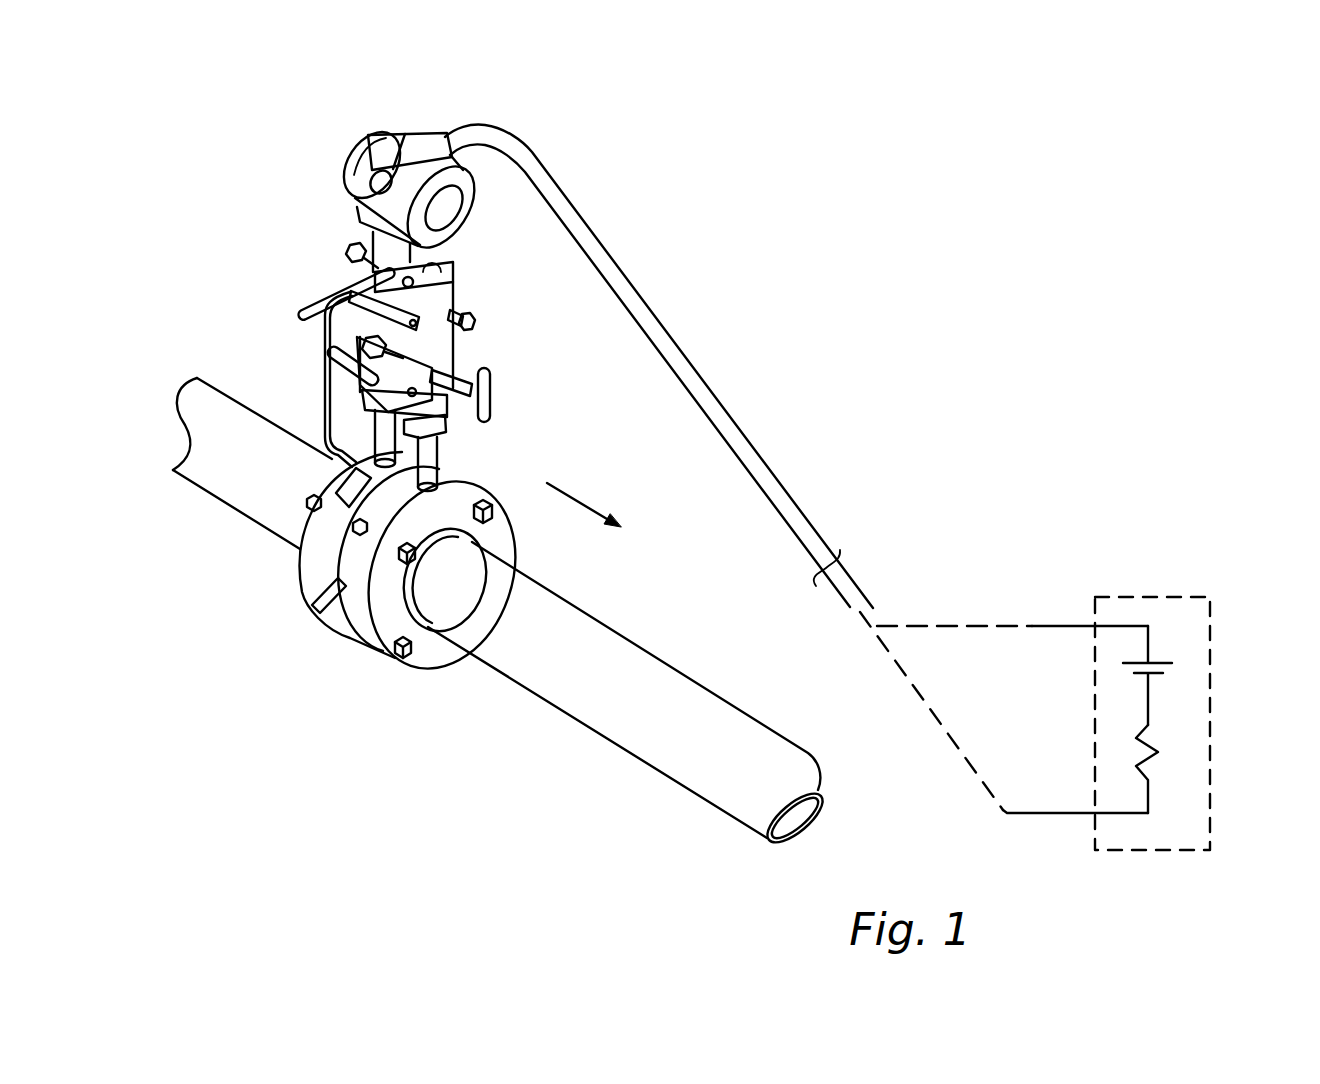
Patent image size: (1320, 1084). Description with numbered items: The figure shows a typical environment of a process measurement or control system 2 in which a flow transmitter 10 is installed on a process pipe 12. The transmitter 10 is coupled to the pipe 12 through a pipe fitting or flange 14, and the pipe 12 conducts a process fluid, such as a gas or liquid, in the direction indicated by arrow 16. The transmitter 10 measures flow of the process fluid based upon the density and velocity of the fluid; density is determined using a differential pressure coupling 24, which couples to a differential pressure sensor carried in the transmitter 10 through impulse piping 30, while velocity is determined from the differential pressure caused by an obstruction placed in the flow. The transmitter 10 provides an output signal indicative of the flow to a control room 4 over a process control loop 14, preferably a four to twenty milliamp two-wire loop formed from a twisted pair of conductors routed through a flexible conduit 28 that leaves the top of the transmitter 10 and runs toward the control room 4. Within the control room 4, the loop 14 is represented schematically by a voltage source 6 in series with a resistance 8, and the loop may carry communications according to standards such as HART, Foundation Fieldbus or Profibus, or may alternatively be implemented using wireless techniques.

The process measurement or control system 2 is at (778, 222).
The control room 4 is at (1130, 597).
The voltage source 6 is at (1163, 663).
The resistance 8 is at (1153, 762).
The flow transmitter 10 is at (405, 122).
The pipe 12 is at (247, 490).
The process control loop 14 is at (337, 630).
The arrow 16 is at (568, 493).
The differential pressure coupling 24 is at (337, 462).
The flexible conduit 28 is at (656, 318).
The impulse piping 30 is at (313, 388).